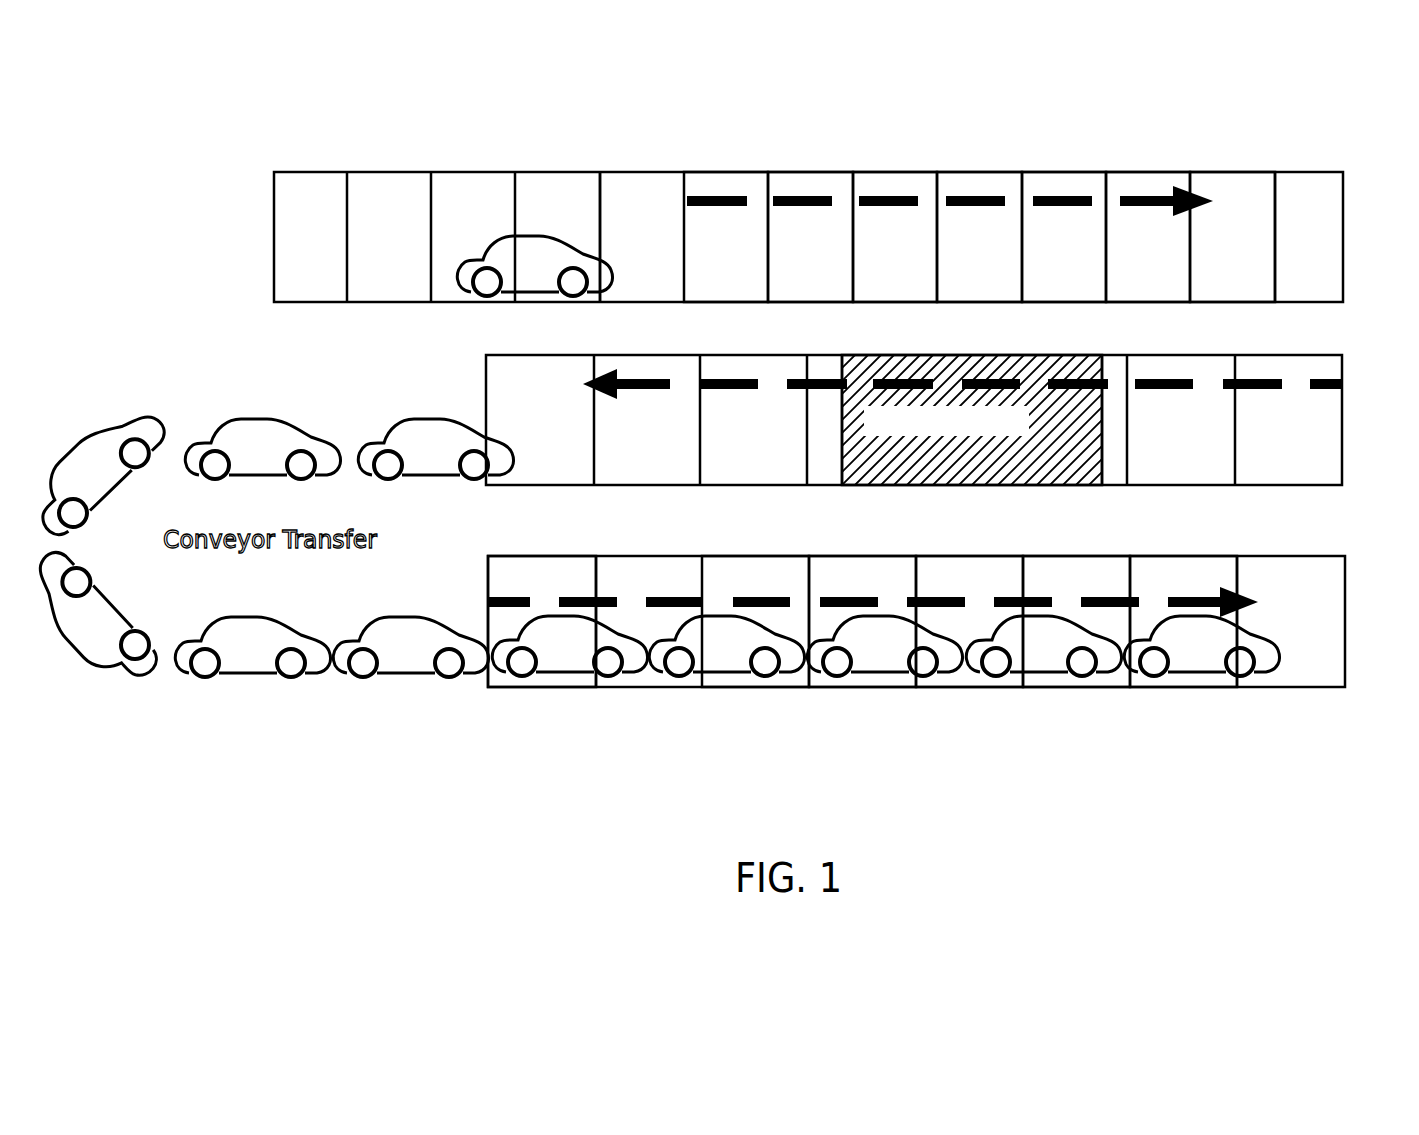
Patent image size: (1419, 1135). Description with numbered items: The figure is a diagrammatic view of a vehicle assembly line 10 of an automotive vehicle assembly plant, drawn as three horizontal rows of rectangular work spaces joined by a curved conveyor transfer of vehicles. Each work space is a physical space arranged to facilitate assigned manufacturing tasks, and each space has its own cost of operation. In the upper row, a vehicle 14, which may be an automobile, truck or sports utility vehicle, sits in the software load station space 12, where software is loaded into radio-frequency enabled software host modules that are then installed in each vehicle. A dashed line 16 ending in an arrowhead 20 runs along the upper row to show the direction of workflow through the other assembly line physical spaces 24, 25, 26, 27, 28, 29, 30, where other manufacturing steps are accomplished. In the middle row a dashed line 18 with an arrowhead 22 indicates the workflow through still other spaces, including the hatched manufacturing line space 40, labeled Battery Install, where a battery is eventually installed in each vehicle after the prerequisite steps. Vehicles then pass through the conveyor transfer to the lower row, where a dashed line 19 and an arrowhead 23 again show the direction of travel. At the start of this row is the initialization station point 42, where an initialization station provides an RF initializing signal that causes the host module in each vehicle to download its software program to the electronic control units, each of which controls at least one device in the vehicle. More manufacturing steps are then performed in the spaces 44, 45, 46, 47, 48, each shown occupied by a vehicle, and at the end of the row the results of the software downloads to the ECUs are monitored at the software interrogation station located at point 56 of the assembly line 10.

The vehicle assembly line 10 is at (232, 231).
The software load station space 12 is at (543, 148).
The vehicle 14 is at (605, 268).
The dashed line 16 is at (965, 196).
The dashed line 18 is at (992, 378).
The dashed line 19 is at (848, 598).
The arrowhead 20 is at (1205, 200).
The arrowhead 22 is at (583, 383).
The arrowhead 23 is at (1258, 600).
The assembly line physical space 24 is at (718, 222).
The assembly line physical space 25 is at (802, 222).
The assembly line physical space 26 is at (887, 222).
The assembly line physical space 27 is at (971, 222).
The assembly line physical space 28 is at (1056, 222).
The assembly line physical space 29 is at (1140, 222).
The assembly line physical space 30 is at (1225, 222).
The manufacturing line space 40 is at (972, 420).
The initialization station point 42 is at (488, 689).
The manufacturing space 44 is at (751, 605).
The manufacturing space 45 is at (858, 605).
The manufacturing space 46 is at (964, 606).
The manufacturing space 47 is at (1070, 606).
The manufacturing space 48 is at (1177, 606).
The software interrogation station point 56 is at (1295, 748).